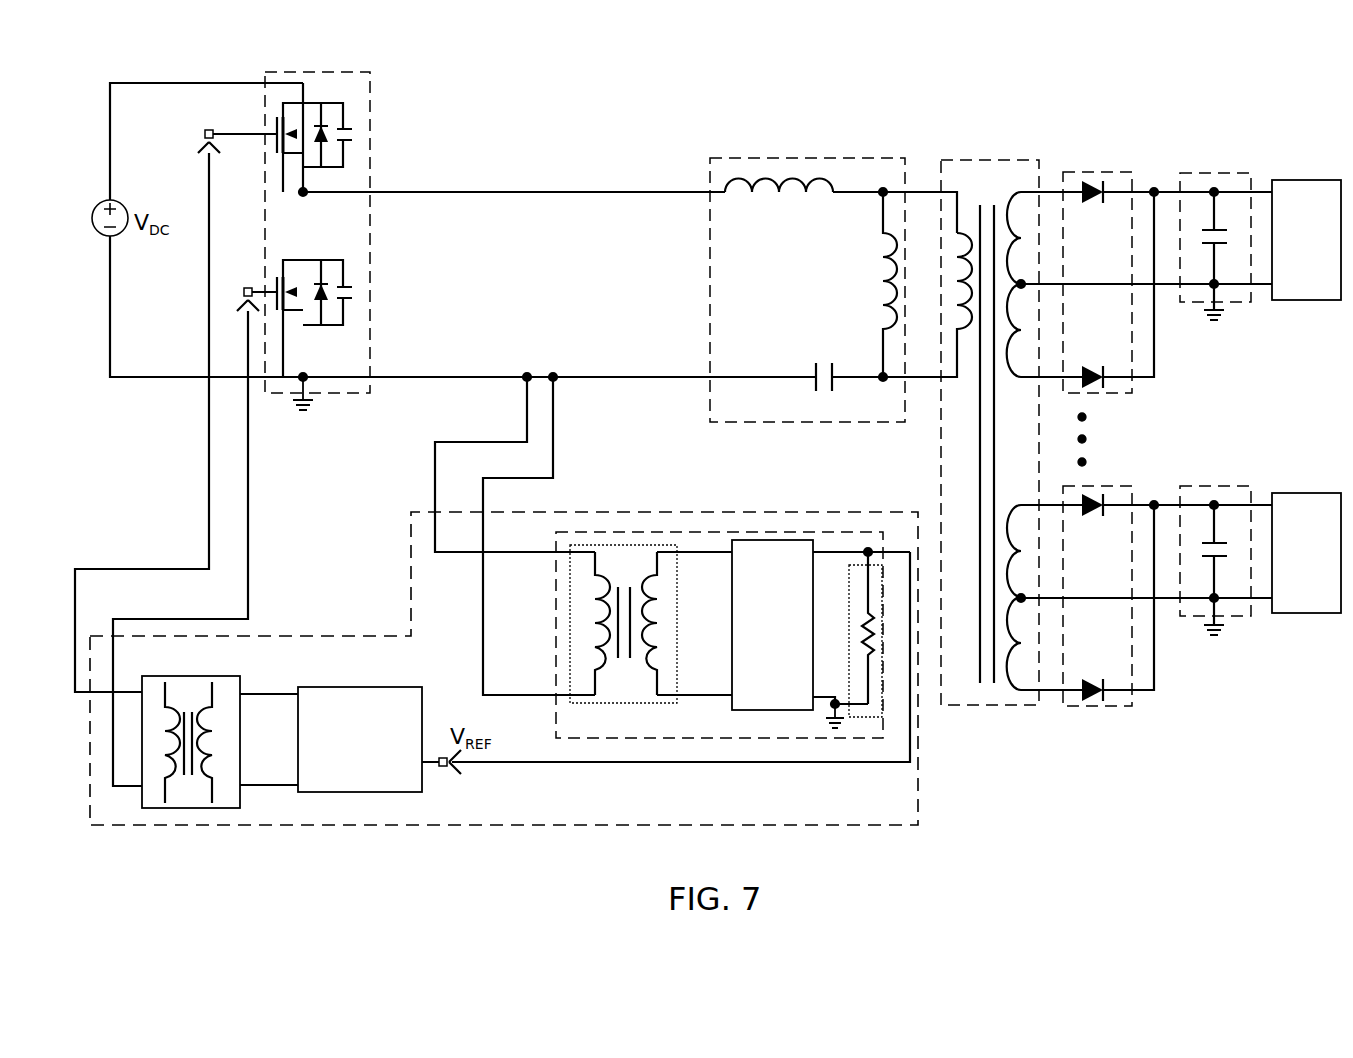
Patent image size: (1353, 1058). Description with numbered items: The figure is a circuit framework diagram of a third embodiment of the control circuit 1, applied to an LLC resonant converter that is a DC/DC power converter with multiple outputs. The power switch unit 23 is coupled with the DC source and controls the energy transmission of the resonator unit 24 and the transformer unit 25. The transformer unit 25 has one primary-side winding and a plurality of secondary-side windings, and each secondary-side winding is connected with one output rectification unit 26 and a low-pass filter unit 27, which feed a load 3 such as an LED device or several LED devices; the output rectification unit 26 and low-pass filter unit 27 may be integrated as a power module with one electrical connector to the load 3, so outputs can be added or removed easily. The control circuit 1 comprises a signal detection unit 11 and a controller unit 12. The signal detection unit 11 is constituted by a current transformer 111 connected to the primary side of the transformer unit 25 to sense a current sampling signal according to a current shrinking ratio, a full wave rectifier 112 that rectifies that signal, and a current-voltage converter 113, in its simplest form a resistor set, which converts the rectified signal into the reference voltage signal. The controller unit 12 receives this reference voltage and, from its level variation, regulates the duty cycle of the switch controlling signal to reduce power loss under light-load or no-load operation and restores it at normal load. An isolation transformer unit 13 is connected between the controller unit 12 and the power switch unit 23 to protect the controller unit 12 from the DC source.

The control circuit 1 is at (305, 626).
The load 3 is at (1284, 178).
The signal detection unit 11 is at (703, 640).
The controller unit 12 is at (416, 684).
The isolation transformer unit 13 is at (238, 814).
The power switch unit 23 is at (372, 108).
The resonator unit 24 is at (787, 158).
The transformer unit 25 is at (941, 166).
The output rectification unit 26 is at (1063, 176).
The low-pass filter unit 27 is at (1180, 176).
The current transformer 111 is at (630, 700).
The full wave rectifier 112 is at (765, 706).
The current-voltage converter 113 is at (848, 580).